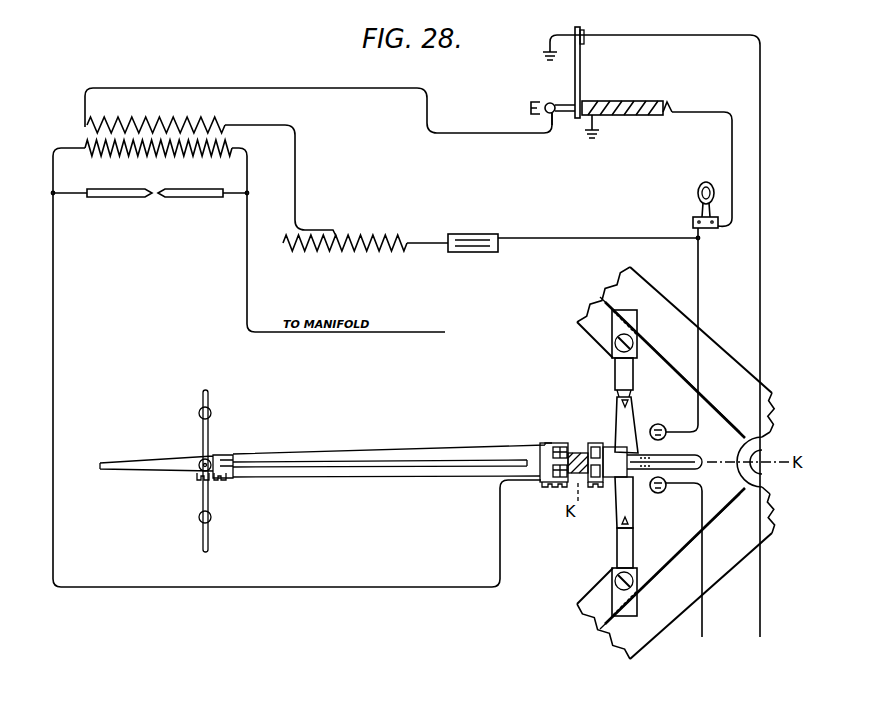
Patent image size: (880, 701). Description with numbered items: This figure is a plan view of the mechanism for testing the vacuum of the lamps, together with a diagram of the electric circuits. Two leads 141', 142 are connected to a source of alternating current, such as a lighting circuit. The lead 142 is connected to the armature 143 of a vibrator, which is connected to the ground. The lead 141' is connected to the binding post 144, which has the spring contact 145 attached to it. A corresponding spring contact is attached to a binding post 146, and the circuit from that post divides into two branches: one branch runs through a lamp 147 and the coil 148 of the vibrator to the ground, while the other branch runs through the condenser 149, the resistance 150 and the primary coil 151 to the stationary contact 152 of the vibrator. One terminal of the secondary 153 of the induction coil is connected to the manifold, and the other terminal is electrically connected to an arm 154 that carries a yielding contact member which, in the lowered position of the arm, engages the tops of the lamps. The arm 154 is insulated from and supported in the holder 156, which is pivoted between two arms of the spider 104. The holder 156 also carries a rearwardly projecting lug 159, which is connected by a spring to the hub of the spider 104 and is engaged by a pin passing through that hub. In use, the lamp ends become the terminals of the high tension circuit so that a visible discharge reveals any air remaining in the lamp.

The spider 104 is at (616, 656).
The lead 141' is at (705, 560).
The lead 142 is at (760, 615).
The armature 143 is at (580, 80).
The binding post 144 is at (664, 493).
The spring contact 145 is at (650, 473).
The binding post 146 is at (660, 424).
The lamp 147 is at (698, 190).
The coil 148 is at (640, 116).
The condenser 149 is at (477, 232).
The resistance 150 is at (382, 233).
The primary coil 151 is at (210, 122).
The stationary contact 152 is at (550, 103).
The secondary 153 is at (205, 154).
The arm 154 is at (430, 476).
The holder 156 is at (616, 416).
The lug 159 is at (737, 440).